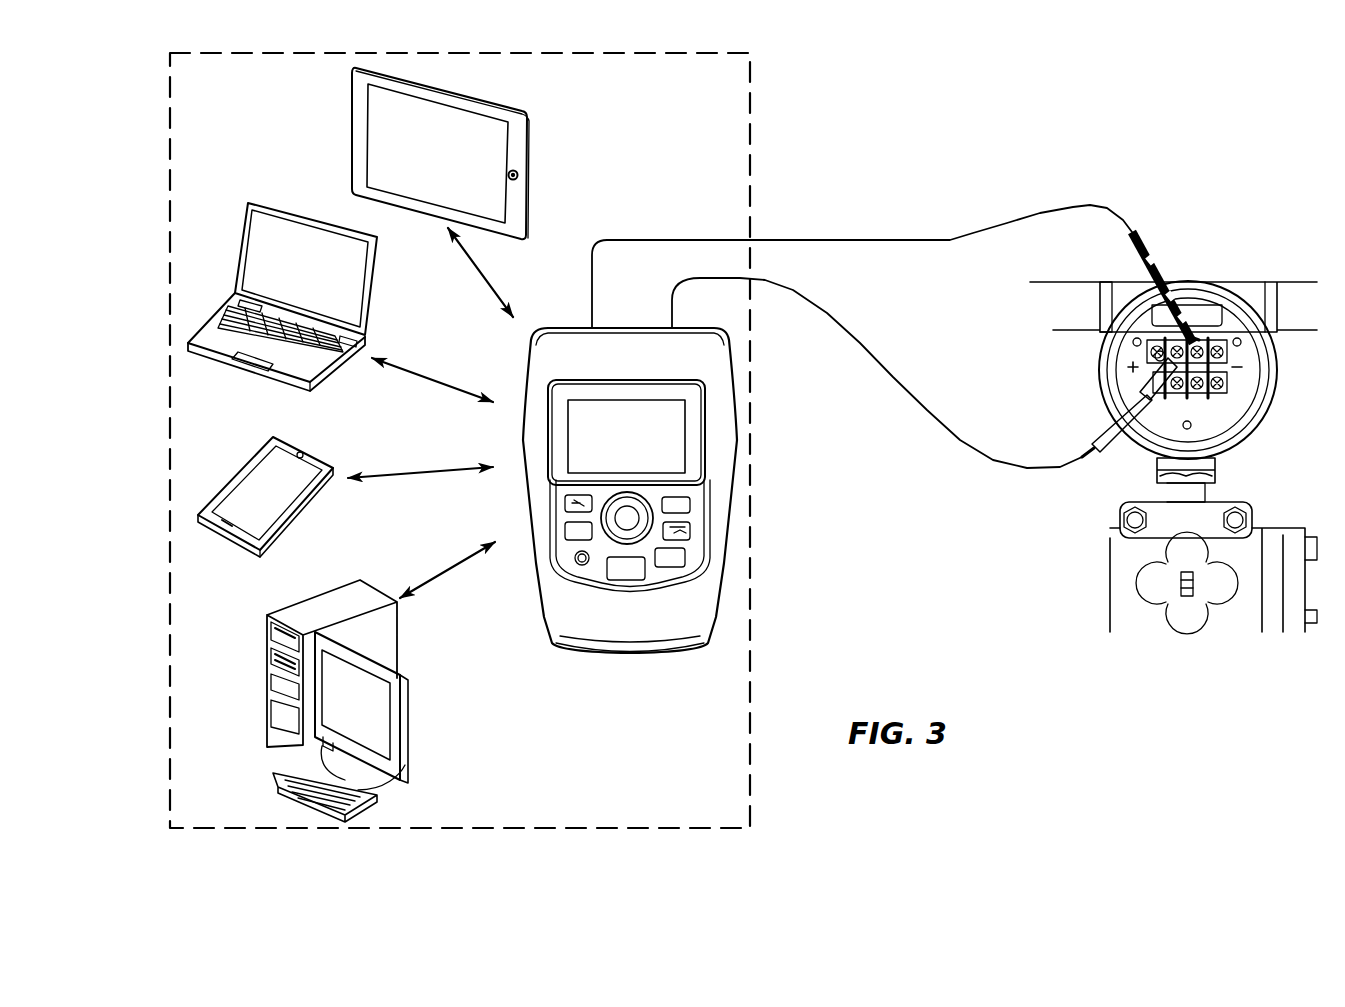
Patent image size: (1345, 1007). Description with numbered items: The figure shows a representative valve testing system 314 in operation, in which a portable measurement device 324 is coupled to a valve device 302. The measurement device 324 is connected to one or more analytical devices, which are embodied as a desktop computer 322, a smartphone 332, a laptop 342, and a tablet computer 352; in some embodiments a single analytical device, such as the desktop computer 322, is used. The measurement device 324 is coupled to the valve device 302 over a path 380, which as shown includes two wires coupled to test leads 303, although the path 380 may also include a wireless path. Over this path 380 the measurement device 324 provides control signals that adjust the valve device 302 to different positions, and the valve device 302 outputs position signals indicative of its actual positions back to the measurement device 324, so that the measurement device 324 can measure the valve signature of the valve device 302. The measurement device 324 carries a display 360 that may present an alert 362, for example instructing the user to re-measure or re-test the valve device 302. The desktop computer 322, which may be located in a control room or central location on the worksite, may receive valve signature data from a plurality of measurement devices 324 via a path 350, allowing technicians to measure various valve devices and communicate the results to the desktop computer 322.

The valve device 302 is at (1147, 357).
The test leads 303 is at (1200, 337).
The valve testing system 314 is at (750, 105).
The desktop computer 322 is at (407, 711).
The measurement device 324 is at (599, 490).
The smartphone 332 is at (313, 446).
The laptop 342 is at (373, 284).
The path 350 is at (490, 284).
The tablet computer 352 is at (352, 131).
The display 360 is at (570, 457).
The alert 362 is at (570, 420).
The path 380 is at (823, 230).